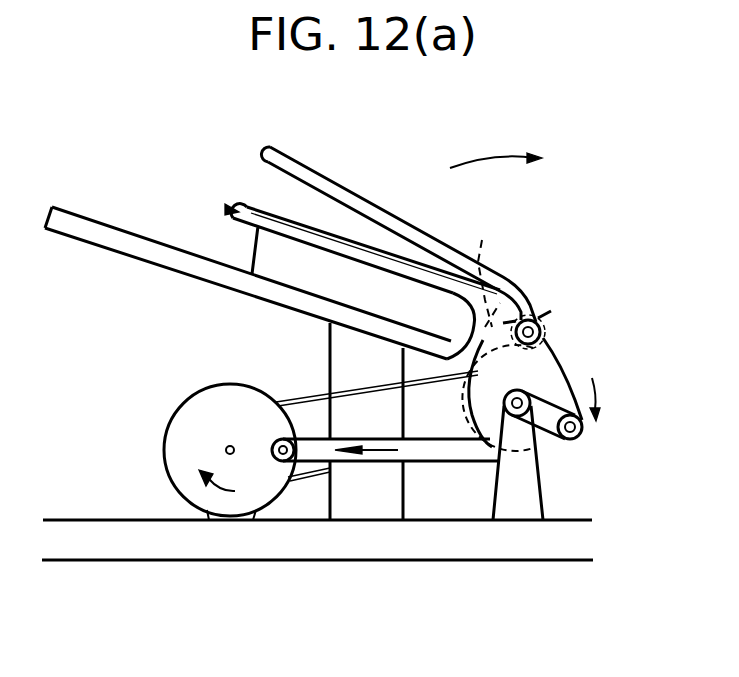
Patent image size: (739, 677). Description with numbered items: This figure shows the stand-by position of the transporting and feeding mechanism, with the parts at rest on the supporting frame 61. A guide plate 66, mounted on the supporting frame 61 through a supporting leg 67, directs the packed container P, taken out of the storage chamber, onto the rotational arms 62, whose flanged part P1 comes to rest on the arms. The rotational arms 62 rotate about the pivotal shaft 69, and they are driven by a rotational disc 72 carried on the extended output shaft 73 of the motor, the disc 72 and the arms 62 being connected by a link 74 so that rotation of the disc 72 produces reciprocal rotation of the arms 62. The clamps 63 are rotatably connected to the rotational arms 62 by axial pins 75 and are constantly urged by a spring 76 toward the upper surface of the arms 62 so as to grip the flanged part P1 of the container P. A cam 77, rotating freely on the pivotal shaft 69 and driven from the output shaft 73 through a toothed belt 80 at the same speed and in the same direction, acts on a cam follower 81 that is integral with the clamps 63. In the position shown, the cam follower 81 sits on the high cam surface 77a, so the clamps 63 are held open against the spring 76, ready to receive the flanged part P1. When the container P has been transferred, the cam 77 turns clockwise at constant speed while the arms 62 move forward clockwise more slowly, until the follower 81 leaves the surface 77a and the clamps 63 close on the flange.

The supporting frame 61 is at (230, 546).
The rotational arms 62 is at (226, 209).
The clamps 63 is at (284, 148).
The guide plate 66 is at (118, 245).
The supporting leg 67 is at (366, 508).
The pivotal shaft 69 is at (538, 452).
The rotational disc 72 is at (172, 465).
The extended output shaft 73 is at (226, 447).
The link 74 is at (436, 463).
The axial pins 75 is at (531, 318).
The spring 76 is at (552, 312).
The cam 77 is at (560, 387).
The high cam surface 77a is at (471, 398).
The toothed belt 80 is at (301, 398).
The cam follower 81 is at (491, 265).
The container P is at (263, 259).
The flanged part P1 is at (252, 206).